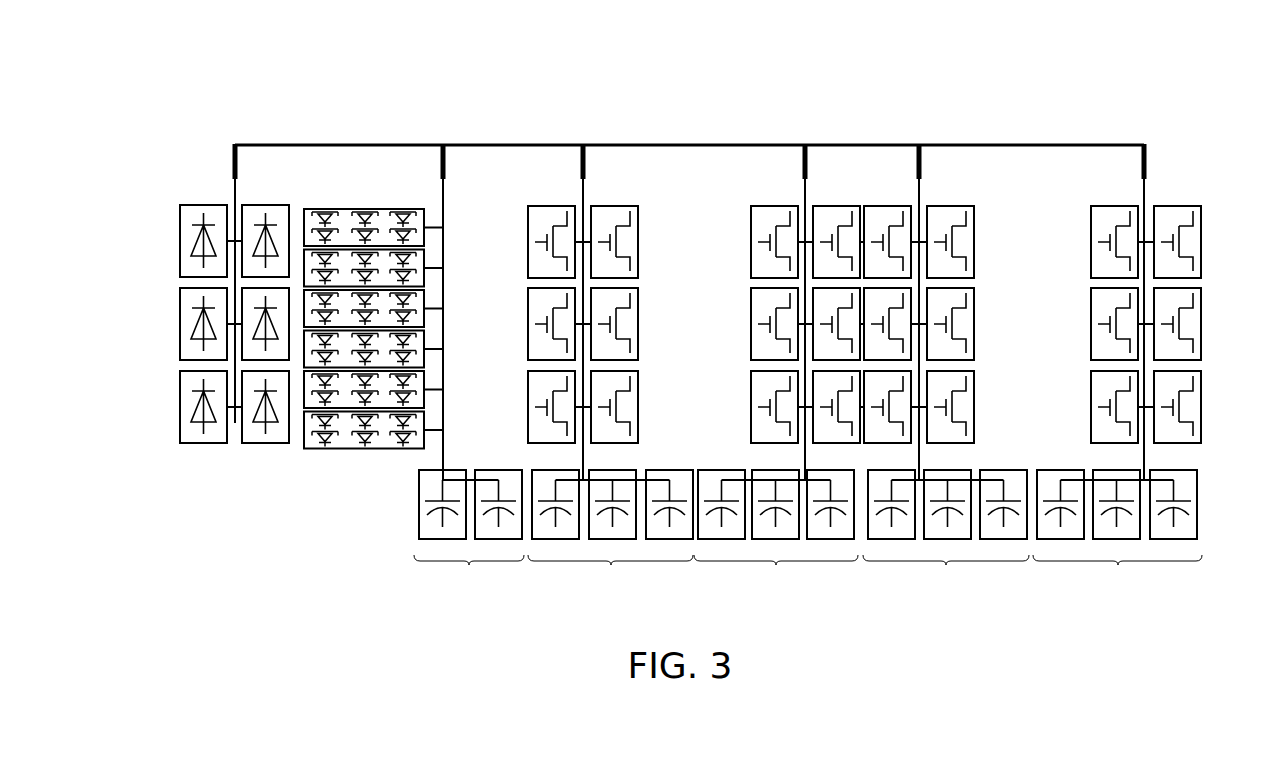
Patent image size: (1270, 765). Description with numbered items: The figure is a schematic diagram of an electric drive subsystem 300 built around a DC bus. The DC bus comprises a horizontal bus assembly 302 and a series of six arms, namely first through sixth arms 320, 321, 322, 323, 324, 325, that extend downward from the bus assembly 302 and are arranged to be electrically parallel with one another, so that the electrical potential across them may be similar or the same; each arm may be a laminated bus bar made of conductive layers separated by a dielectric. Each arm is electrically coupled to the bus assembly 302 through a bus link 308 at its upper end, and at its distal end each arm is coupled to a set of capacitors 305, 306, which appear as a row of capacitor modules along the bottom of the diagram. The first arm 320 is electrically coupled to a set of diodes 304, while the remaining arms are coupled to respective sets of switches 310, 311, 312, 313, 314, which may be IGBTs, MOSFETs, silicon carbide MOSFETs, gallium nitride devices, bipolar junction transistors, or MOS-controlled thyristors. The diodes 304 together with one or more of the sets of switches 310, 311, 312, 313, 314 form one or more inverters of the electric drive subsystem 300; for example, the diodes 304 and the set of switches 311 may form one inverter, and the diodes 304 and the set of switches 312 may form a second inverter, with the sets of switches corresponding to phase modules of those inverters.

The electric drive subsystem 300 is at (277, 101).
The bus assembly 302 is at (495, 144).
The set of diodes 304 is at (165, 407).
The set of capacitors 305 is at (469, 532).
The set of capacitors 306 is at (865, 532).
The bus links 308 is at (653, 161).
The set of switches 310 is at (348, 460).
The set of switches 311 is at (509, 299).
The set of switches 312 is at (734, 304).
The set of switches 313 is at (988, 304).
The set of switches 314 is at (1077, 304).
The first arm 320 is at (274, 283).
The second arm 321 is at (483, 312).
The third arm 322 is at (623, 312).
The fourth arm 323 is at (846, 312).
The fifth arm 324 is at (959, 312).
The sixth arm 325 is at (1185, 312).